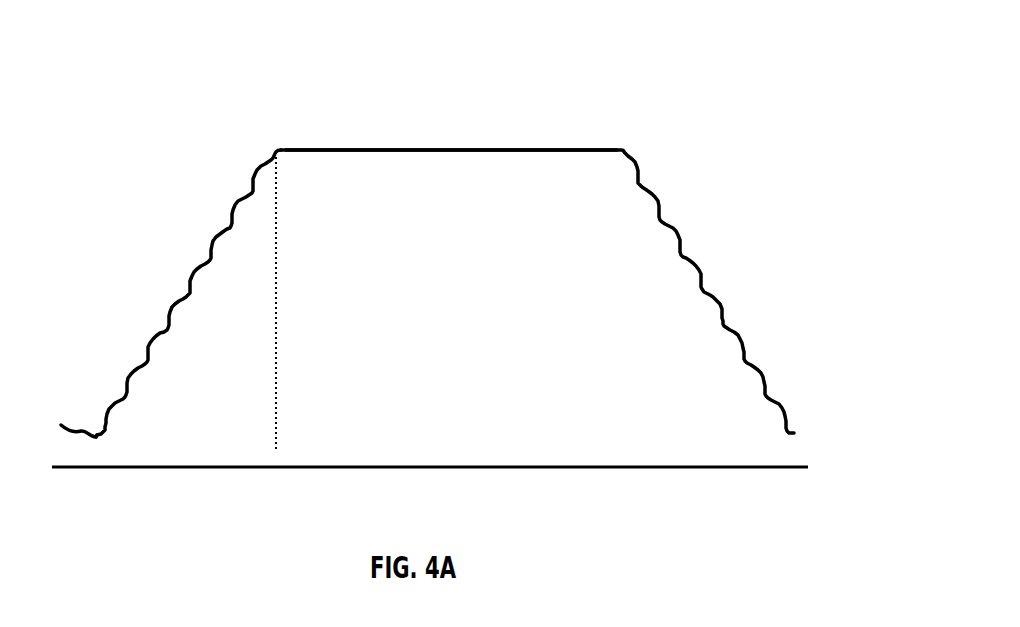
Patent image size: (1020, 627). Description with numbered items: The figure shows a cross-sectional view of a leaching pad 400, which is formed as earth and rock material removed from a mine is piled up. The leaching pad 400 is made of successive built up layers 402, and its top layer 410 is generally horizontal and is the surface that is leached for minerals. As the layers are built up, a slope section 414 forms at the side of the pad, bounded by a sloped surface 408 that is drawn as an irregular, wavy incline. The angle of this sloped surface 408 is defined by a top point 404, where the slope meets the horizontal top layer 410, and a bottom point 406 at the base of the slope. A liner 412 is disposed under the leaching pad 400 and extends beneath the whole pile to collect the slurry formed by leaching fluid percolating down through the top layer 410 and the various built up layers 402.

The leaching pad 400 is at (798, 46).
The built up layers 402 is at (460, 316).
The top point 404 is at (273, 150).
The bottom point 406 is at (70, 418).
The sloped surface 408 is at (178, 324).
The top layer 410 is at (395, 150).
The liner 412 is at (250, 468).
The slope section 414 is at (235, 380).